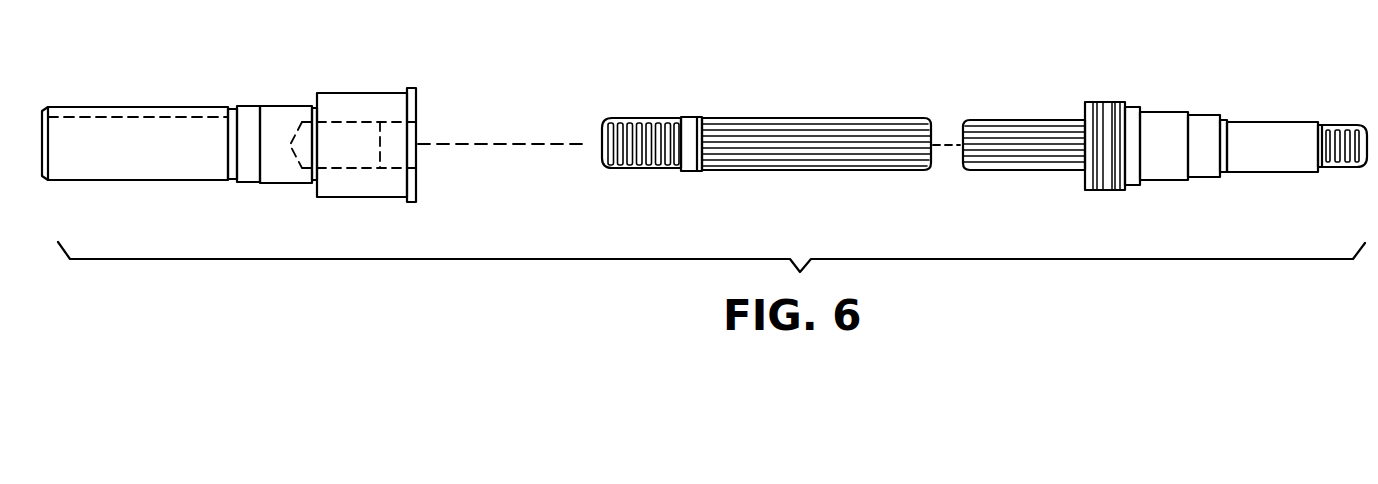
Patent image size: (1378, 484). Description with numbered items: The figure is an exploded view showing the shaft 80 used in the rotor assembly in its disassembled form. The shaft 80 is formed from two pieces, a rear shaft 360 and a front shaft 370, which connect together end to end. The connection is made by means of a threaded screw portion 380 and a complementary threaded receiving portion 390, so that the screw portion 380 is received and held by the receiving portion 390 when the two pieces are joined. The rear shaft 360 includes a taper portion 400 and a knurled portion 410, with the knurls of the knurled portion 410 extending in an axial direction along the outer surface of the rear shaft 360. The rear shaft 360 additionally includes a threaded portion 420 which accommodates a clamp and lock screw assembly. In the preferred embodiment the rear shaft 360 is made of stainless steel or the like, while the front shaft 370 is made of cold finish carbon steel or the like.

The shaft 80 is at (808, 81).
The rear shaft 360 is at (1277, 158).
The front shaft 370 is at (288, 176).
The threaded screw portion 380 is at (644, 157).
The threaded receiving portion 390 is at (351, 133).
The taper portion 400 is at (688, 130).
The knurled portion 410 is at (846, 162).
The threaded portion 420 is at (1104, 106).